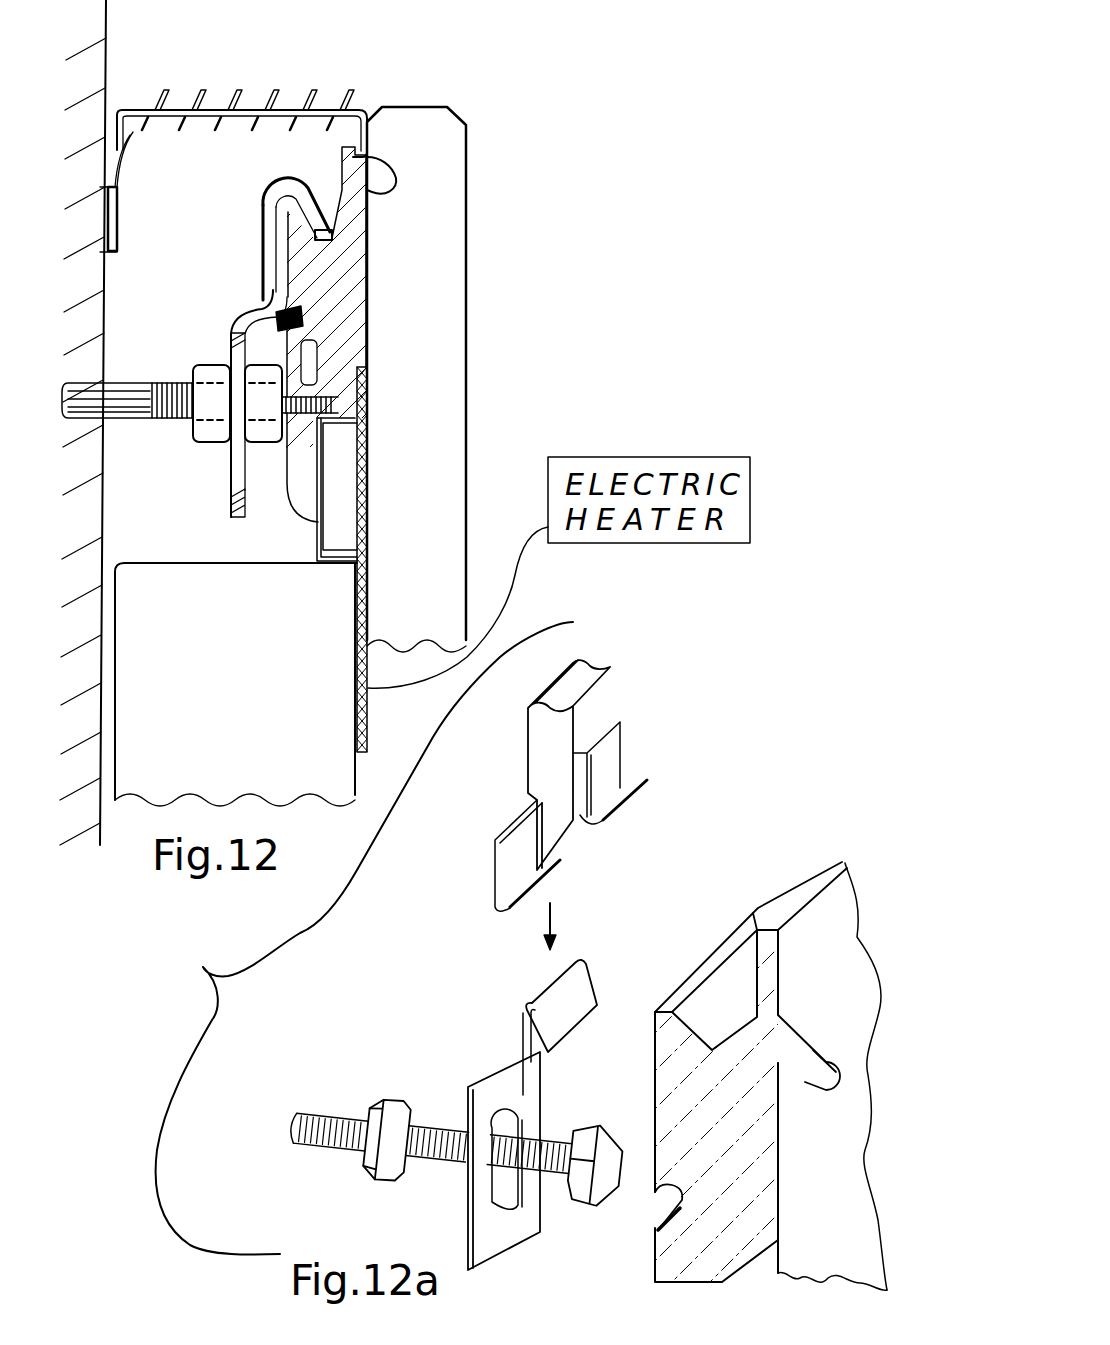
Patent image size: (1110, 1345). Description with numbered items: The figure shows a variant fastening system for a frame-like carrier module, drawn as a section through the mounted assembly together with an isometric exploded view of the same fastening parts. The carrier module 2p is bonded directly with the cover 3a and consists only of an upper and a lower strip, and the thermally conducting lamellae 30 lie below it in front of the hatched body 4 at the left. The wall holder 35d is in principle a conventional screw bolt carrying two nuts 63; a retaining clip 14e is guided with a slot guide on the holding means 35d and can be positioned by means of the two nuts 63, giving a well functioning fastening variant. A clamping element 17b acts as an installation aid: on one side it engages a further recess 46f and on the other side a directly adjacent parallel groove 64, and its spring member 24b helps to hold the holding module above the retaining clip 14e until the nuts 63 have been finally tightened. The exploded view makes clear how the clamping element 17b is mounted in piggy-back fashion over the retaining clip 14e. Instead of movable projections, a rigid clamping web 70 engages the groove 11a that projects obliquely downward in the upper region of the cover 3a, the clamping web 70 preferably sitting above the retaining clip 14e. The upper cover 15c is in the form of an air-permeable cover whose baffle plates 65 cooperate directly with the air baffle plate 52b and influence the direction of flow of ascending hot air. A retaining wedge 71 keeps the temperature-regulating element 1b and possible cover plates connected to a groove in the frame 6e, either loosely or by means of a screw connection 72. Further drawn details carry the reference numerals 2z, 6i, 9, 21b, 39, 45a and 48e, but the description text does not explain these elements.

In FIG. 12, the temperature-regulating element 1b is at (375, 467).
In FIG. 12, the carrier module 2p is at (374, 255).
In FIG. 12A, the support block 2z is at (652, 1092).
In FIG. 12, the cover 3a is at (425, 555).
In FIG. 12A, the cover 3a is at (808, 952).
In FIG. 12, the wall 4 is at (83, 534).
In FIG. 12, the frame 6e is at (340, 280).
In FIG. 12A, the frame 6e is at (655, 1050).
In FIG. 12A, the bottom edge of block 6i is at (730, 1260).
In FIG. 12, the gap 9 is at (349, 133).
In FIG. 12, the groove 11a is at (390, 165).
In FIG. 12, the retaining clip 14e is at (236, 320).
In FIG. 12A, the retaining clip 14e is at (484, 1030).
In FIG. 12, the upper cover 15c is at (296, 92).
In FIG. 12, the clamping element 17b is at (272, 172).
In FIG. 12A, the clamping element 17b is at (636, 755).
In FIG. 12A, the hanger clip 21b is at (527, 753).
In FIG. 12, the spring member 24b is at (260, 240).
In FIG. 12, the thermally conducting lamellae 30 is at (236, 712).
In FIG. 12, the wall holder 35d is at (160, 371).
In FIG. 12A, the wall holder 35d is at (348, 1096).
In FIG. 12, the tab 39 is at (332, 382).
In FIG. 12A, the tab 39 is at (593, 946).
In FIG. 12, the engaging portion 45a is at (335, 233).
In FIG. 12, the further recess 46f is at (388, 176).
In FIG. 12A, the tab top surface 48e is at (600, 993).
In FIG. 12, the air baffle plate 52b is at (130, 163).
In FIG. 12, the nuts 63 is at (260, 430).
In FIG. 12A, the nuts 63 is at (388, 1108).
In FIG. 12, the parallel groove 64 is at (286, 305).
In FIG. 12A, the parallel groove 64 is at (652, 1208).
In FIG. 12, the baffle plates 65 is at (157, 97).
In FIG. 12, the rigid clamping web 70 is at (381, 170).
In FIG. 12A, the rigid clamping web 70 is at (803, 1070).
In FIG. 12, the retaining wedge 71 is at (300, 487).
In FIG. 12, the screw connection 72 is at (367, 427).